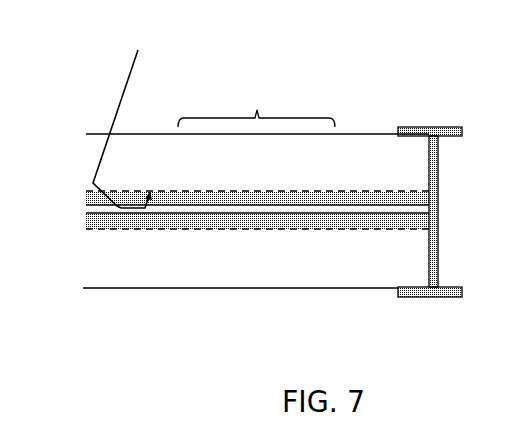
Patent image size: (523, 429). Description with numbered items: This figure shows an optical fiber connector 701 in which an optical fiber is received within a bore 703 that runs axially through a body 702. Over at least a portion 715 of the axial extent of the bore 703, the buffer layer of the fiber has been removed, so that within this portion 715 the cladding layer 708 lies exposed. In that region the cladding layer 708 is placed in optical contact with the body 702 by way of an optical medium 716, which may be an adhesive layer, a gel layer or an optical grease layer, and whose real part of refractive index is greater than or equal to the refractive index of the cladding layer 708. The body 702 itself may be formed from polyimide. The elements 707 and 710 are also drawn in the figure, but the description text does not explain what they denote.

The sensor assembly 701 is at (190, 103).
The housing bottom wall 702 is at (102, 263).
The lower electrode layer 703 is at (180, 242).
The channel between layers 707 is at (248, 210).
The lower layer 708 is at (313, 220).
The light path 710 is at (139, 116).
The sensing region 715 is at (256, 105).
The upper layer 716 is at (323, 187).